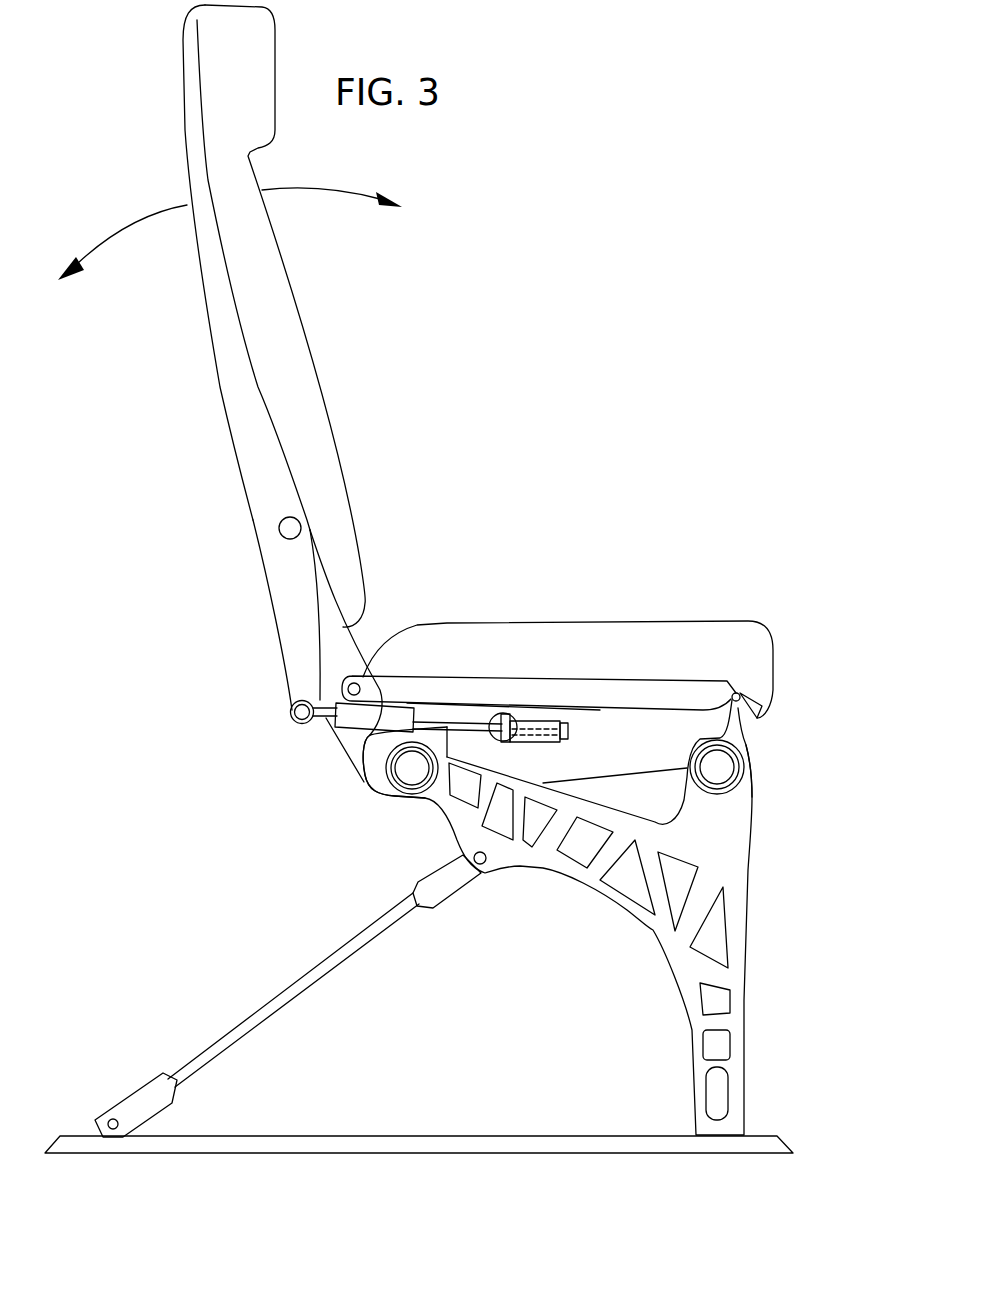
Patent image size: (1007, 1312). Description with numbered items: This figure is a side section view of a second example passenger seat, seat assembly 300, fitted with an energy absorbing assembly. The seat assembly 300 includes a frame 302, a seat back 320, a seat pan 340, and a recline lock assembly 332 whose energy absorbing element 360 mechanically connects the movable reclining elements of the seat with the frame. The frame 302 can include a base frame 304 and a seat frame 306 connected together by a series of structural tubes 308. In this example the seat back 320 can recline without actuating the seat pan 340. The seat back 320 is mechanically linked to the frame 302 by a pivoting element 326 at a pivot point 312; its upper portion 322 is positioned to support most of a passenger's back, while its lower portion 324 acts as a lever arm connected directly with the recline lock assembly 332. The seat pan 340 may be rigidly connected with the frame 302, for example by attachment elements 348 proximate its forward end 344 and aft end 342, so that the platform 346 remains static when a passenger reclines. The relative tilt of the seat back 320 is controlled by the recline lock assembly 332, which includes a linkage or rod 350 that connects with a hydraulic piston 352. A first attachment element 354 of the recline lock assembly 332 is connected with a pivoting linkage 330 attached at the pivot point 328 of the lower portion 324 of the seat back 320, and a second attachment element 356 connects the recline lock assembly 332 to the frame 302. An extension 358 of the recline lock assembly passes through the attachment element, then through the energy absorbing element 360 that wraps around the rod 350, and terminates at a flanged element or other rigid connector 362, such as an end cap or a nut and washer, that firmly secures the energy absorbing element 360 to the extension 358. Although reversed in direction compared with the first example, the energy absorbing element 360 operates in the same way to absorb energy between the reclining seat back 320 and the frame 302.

The seat assembly 300 is at (608, 361).
The frame 302 is at (777, 863).
The base frame 304 is at (750, 812).
The seat frame 306 is at (746, 740).
The structural tubes 308 is at (740, 767).
The pivot point 312 is at (255, 527).
The seat back 320 is at (308, 345).
The upper portion 322 is at (275, 432).
The lower portion 324 is at (282, 632).
The pivoting element 326 is at (300, 522).
The pivot point 328 is at (296, 720).
The pivoting linkage 330 is at (326, 716).
The recline lock assembly 332 is at (598, 776).
The seat pan 340 is at (688, 586).
The aft end 342 is at (358, 680).
The forward end 344 is at (766, 698).
The platform 346 is at (522, 680).
The attachment elements 348 is at (360, 688).
The rod 350 is at (447, 822).
The hydraulic piston 352 is at (388, 776).
The first attachment element 354 is at (292, 709).
The second attachment element 356 is at (500, 715).
The extension 358 is at (535, 733).
The energy absorbing element 360 is at (572, 682).
The rigid connector 362 is at (576, 735).